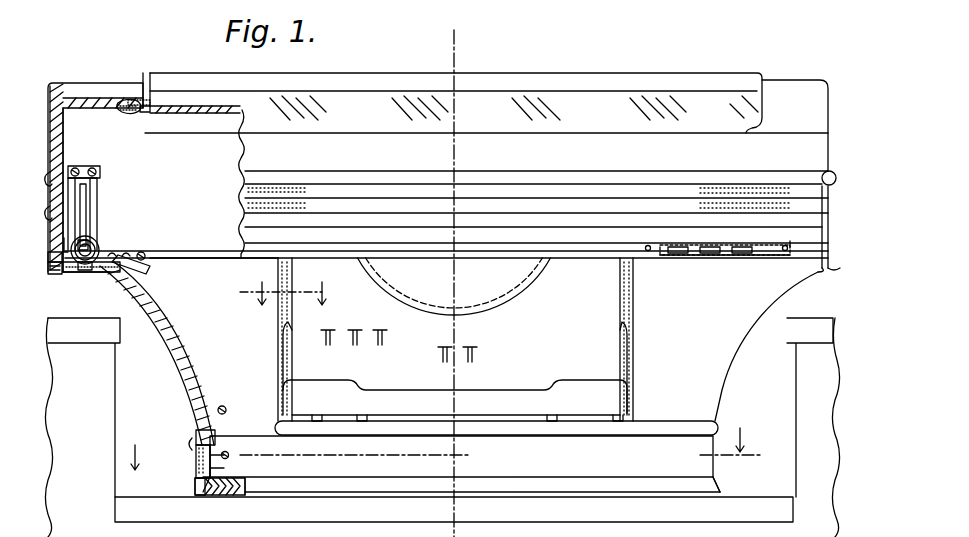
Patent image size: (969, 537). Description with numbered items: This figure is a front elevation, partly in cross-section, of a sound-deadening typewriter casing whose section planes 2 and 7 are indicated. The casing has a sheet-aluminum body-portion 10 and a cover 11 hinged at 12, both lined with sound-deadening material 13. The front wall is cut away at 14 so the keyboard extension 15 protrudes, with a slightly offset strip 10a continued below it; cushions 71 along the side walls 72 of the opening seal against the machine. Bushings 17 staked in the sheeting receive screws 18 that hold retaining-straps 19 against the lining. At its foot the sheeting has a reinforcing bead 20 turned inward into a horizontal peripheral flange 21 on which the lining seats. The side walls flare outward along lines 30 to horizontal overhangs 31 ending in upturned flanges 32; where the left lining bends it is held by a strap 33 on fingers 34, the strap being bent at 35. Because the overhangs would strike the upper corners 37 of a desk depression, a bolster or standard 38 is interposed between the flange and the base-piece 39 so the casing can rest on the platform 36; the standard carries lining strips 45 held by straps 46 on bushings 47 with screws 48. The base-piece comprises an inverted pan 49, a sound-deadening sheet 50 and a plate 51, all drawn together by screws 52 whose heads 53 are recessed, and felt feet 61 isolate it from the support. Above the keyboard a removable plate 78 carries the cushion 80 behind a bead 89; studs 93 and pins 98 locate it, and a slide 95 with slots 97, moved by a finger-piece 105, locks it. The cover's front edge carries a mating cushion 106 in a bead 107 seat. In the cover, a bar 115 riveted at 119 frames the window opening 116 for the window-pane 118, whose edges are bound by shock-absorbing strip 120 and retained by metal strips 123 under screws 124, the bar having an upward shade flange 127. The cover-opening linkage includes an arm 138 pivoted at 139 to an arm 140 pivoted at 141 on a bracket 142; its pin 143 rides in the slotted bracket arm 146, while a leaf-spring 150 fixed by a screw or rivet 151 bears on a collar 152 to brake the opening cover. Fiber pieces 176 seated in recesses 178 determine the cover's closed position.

The section line 2- 2 is at (442, 536).
The section line 7- 7 is at (440, 446).
The body-portion 10 is at (168, 378).
The offset strip 10a is at (522, 418).
The cover 11 is at (804, 71).
The hinge 12 is at (294, 290).
The sound-deadening material 13 is at (76, 115).
The cut-away opening 14 is at (646, 315).
The keyboard extension 15 is at (612, 380).
The bushings 17 is at (200, 404).
The screws 18 is at (145, 256).
The retaining-straps 19 is at (192, 250).
The reinforcing bead 20 is at (192, 434).
The horizontal peripheral flange 21 is at (198, 446).
The flaring side walls 30 is at (172, 346).
The horizontal overhangs 31 is at (66, 274).
The flanges 32 is at (62, 272).
The strap 33 is at (140, 270).
The fingers 34 is at (132, 256).
The longitudinal bend 35 is at (116, 258).
The platform 36 is at (752, 500).
The upper corners 37 is at (110, 318).
The bolster or standard 38 is at (730, 459).
The base-piece 39 is at (732, 480).
The lining-material strips 45 is at (200, 472).
The straps 46 is at (230, 458).
The bushings 47 is at (198, 458).
The screws 48 is at (226, 455).
The inverted pan 49 is at (194, 488).
The sound-deadening sheet 50 is at (238, 482).
The plate 51 is at (240, 496).
The screws 52 is at (224, 496).
The screw heads 53 is at (198, 494).
The pads or feet 61 is at (260, 492).
The cushions 71 is at (292, 274).
The side walls of opening 72 is at (280, 348).
The removable plate 78 is at (757, 264).
The cushion 80 is at (250, 213).
The bead 89 is at (250, 227).
The studs 93 is at (648, 252).
The slide 95 is at (734, 254).
The slots 97 is at (676, 254).
The pin 98 is at (706, 254).
The finger-piece 105 is at (733, 241).
The cushion 106 is at (250, 198).
The bead 107 is at (250, 184).
The bar 115 is at (130, 100).
The window opening 116 is at (252, 171).
The window-pane 118 is at (228, 106).
The rivets 119 is at (146, 90).
The shock-absorbing strip 120 is at (152, 108).
The metal strips 123 is at (146, 113).
The screws 124 is at (126, 112).
The upward flange 127 is at (762, 78).
The arm 138 is at (86, 240).
The pivot 139 is at (96, 224).
The arm 140 is at (72, 178).
The pivot 141 is at (100, 264).
The bracket 142 is at (80, 272).
The pin 143 is at (86, 190).
The bracket arm 146 is at (96, 163).
The leaf-spring 150 is at (46, 212).
The screw or rivet 151 is at (100, 176).
The collar 152 is at (46, 176).
The fiber pieces 176 is at (48, 268).
The recesses 178 is at (48, 255).